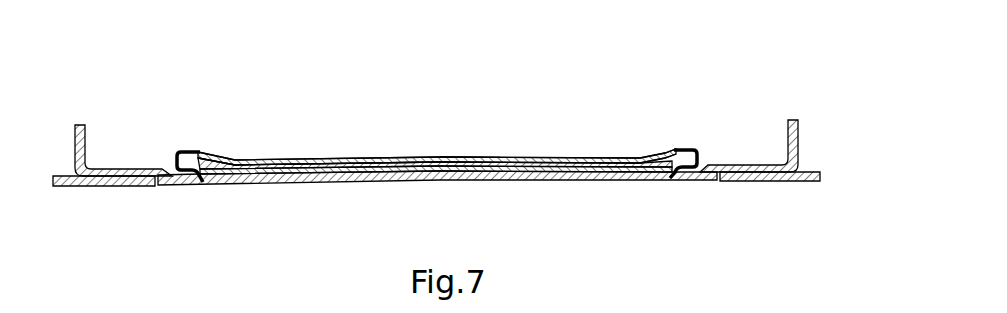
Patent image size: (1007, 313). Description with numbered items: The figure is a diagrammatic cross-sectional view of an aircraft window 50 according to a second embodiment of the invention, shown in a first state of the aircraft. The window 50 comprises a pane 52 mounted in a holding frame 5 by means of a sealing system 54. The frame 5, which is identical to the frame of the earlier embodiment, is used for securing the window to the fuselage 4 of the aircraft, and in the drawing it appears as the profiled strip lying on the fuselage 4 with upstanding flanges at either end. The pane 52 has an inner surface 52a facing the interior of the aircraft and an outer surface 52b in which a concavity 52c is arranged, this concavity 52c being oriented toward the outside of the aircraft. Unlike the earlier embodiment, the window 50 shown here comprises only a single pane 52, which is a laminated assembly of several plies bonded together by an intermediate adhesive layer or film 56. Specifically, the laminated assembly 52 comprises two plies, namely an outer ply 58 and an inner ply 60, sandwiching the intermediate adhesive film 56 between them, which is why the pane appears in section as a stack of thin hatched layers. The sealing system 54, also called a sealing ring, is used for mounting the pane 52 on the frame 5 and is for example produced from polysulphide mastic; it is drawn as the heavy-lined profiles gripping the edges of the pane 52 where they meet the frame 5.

The fuselage 4 is at (762, 179).
The holding frame 5 is at (801, 145).
The aircraft window 50 is at (458, 131).
The pane 52 is at (437, 153).
The inner surface 52a is at (603, 158).
The outer surface 52b is at (623, 180).
The concavity 52c is at (333, 182).
The sealing system 54 is at (653, 108).
The intermediate adhesive film 56 is at (446, 174).
The outer ply 58 is at (393, 179).
The inner ply 60 is at (463, 158).